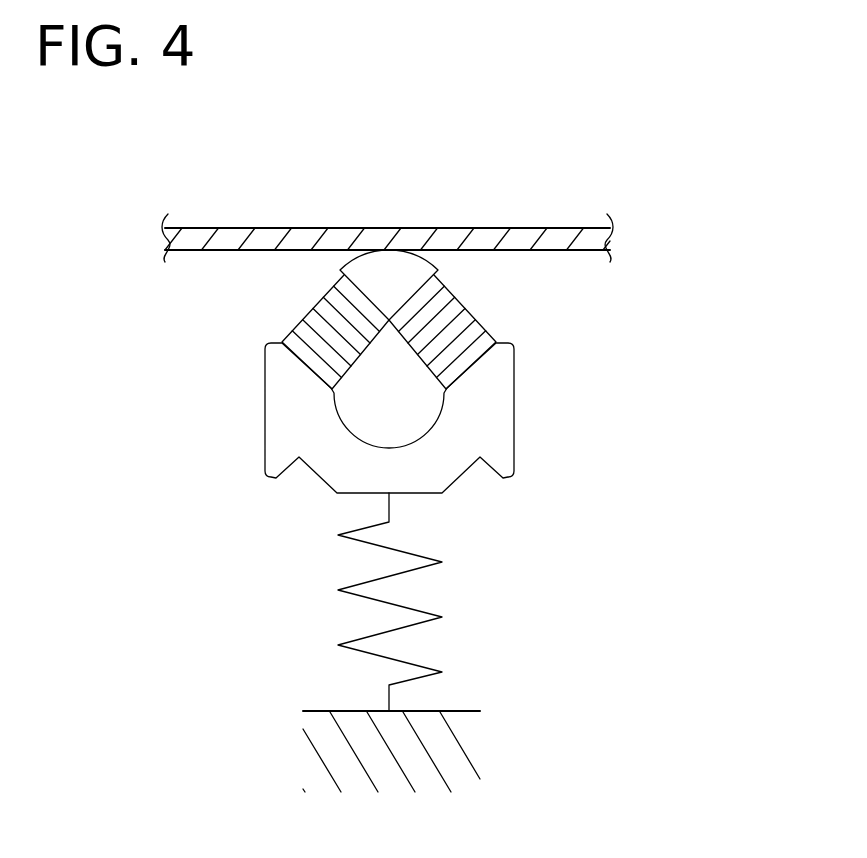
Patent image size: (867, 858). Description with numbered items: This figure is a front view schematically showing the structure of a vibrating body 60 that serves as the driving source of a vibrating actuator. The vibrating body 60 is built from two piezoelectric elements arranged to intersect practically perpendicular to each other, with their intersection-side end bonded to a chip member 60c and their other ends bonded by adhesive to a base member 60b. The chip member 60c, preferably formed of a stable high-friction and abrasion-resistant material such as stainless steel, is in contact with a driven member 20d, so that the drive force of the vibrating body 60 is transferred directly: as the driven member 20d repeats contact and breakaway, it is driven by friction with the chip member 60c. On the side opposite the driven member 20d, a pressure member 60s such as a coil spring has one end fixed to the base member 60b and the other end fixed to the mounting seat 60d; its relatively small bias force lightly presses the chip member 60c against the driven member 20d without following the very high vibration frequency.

The driven member 20d is at (511, 238).
The vibrating body 60 is at (648, 401).
The base member 60b is at (490, 416).
The chip member 60c is at (418, 273).
The pressure member 60s is at (448, 615).
The mounting seat 60d is at (463, 757).